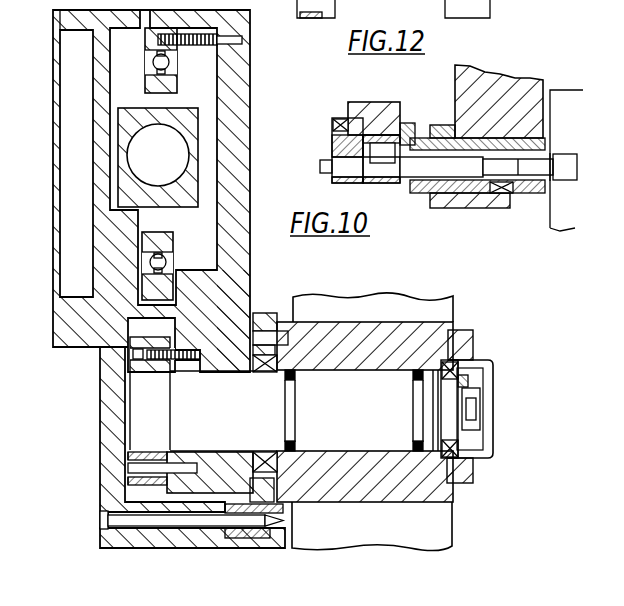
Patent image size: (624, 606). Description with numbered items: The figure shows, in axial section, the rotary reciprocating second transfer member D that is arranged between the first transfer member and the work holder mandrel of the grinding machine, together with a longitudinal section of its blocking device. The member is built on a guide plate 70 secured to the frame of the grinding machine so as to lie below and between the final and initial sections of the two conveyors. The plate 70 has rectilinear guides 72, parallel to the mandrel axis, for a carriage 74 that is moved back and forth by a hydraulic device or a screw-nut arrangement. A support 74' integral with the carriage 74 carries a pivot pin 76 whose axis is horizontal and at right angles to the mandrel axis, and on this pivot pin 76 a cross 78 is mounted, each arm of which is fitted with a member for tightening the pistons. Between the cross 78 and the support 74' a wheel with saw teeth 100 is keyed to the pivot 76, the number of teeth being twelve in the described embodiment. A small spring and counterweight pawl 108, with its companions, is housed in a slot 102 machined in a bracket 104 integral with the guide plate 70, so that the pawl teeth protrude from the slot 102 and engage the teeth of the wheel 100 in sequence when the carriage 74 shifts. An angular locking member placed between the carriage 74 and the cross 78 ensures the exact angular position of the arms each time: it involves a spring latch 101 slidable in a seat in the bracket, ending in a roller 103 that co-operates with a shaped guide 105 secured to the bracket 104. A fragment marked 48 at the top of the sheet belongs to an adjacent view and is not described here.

In FIG. 10, the guide plate 70 is at (110, 82).
In FIG. 10, the rectilinear guides 72 is at (176, 80).
In FIG. 10, the carriage 74 is at (171, 191).
In FIG. 10, the support 74' is at (210, 314).
In FIG. 12, the support 74' is at (482, 96).
In FIG. 10, the pivot pin 76 is at (344, 378).
In FIG. 10, the cross 78 is at (447, 502).
In FIG. 12, the cross 78 is at (577, 97).
In FIG. 10, the wheel with saw teeth 100 is at (270, 313).
In FIG. 12, the spring latch 101 is at (546, 160).
In FIG. 10, the slot 102 is at (272, 517).
In FIG. 12, the roller 103 is at (401, 140).
In FIG. 10, the bracket 104 is at (198, 508).
In FIG. 12, the shaped guide 105 is at (378, 107).
In FIG. 10, the small spring and counterweight pawl 108 is at (260, 527).
In FIG. 10, the second transfer member D is at (464, 307).
In FIG. 12, the fragment 48 is at (490, 0).